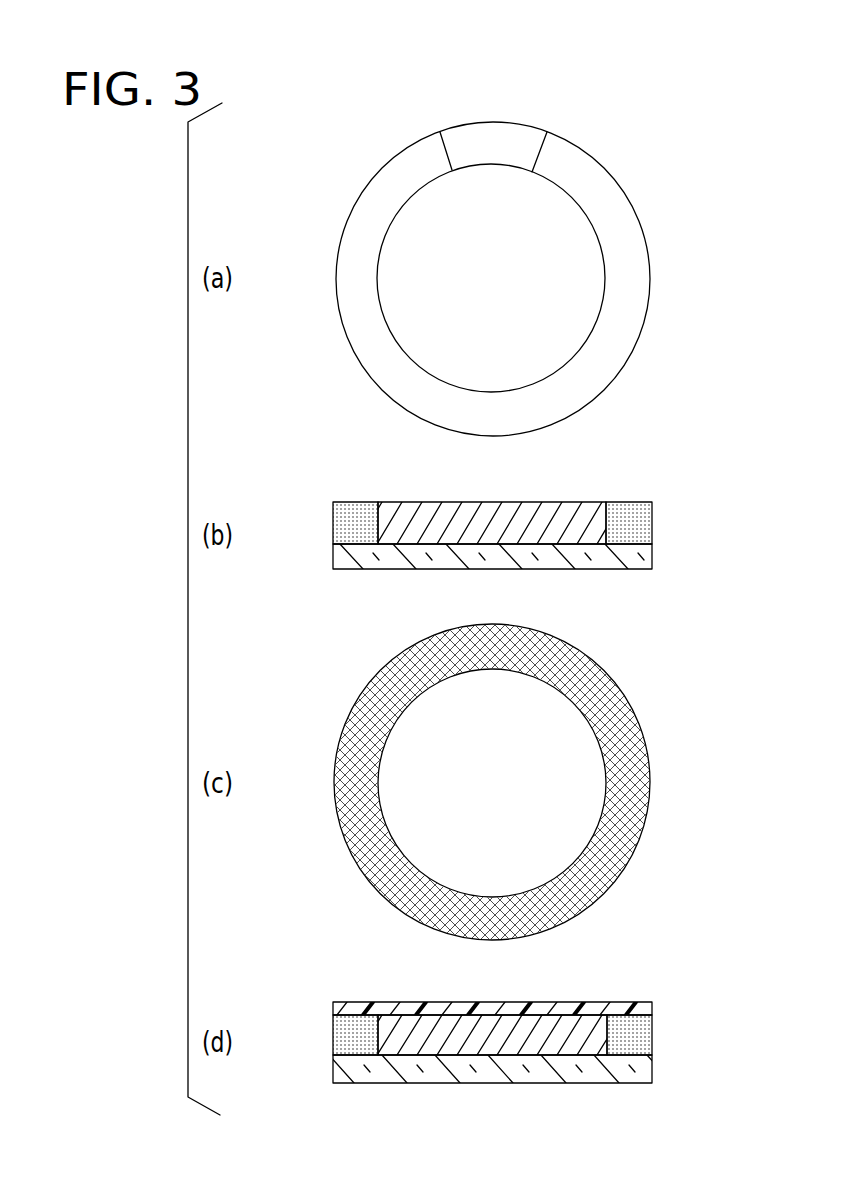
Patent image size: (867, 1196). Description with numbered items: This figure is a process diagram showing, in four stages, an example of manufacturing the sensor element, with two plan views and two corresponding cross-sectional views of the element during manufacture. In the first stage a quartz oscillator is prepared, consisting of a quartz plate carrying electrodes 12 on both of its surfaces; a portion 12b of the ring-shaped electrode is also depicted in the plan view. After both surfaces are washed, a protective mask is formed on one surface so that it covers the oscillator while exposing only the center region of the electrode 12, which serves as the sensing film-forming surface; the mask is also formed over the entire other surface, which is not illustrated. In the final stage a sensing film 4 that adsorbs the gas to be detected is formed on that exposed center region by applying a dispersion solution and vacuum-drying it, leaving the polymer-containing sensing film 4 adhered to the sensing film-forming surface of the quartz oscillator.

The electrode 12 is at (567, 247).
The extension portion of conductive film 12b is at (492, 143).
The sensing film 4 is at (633, 1012).